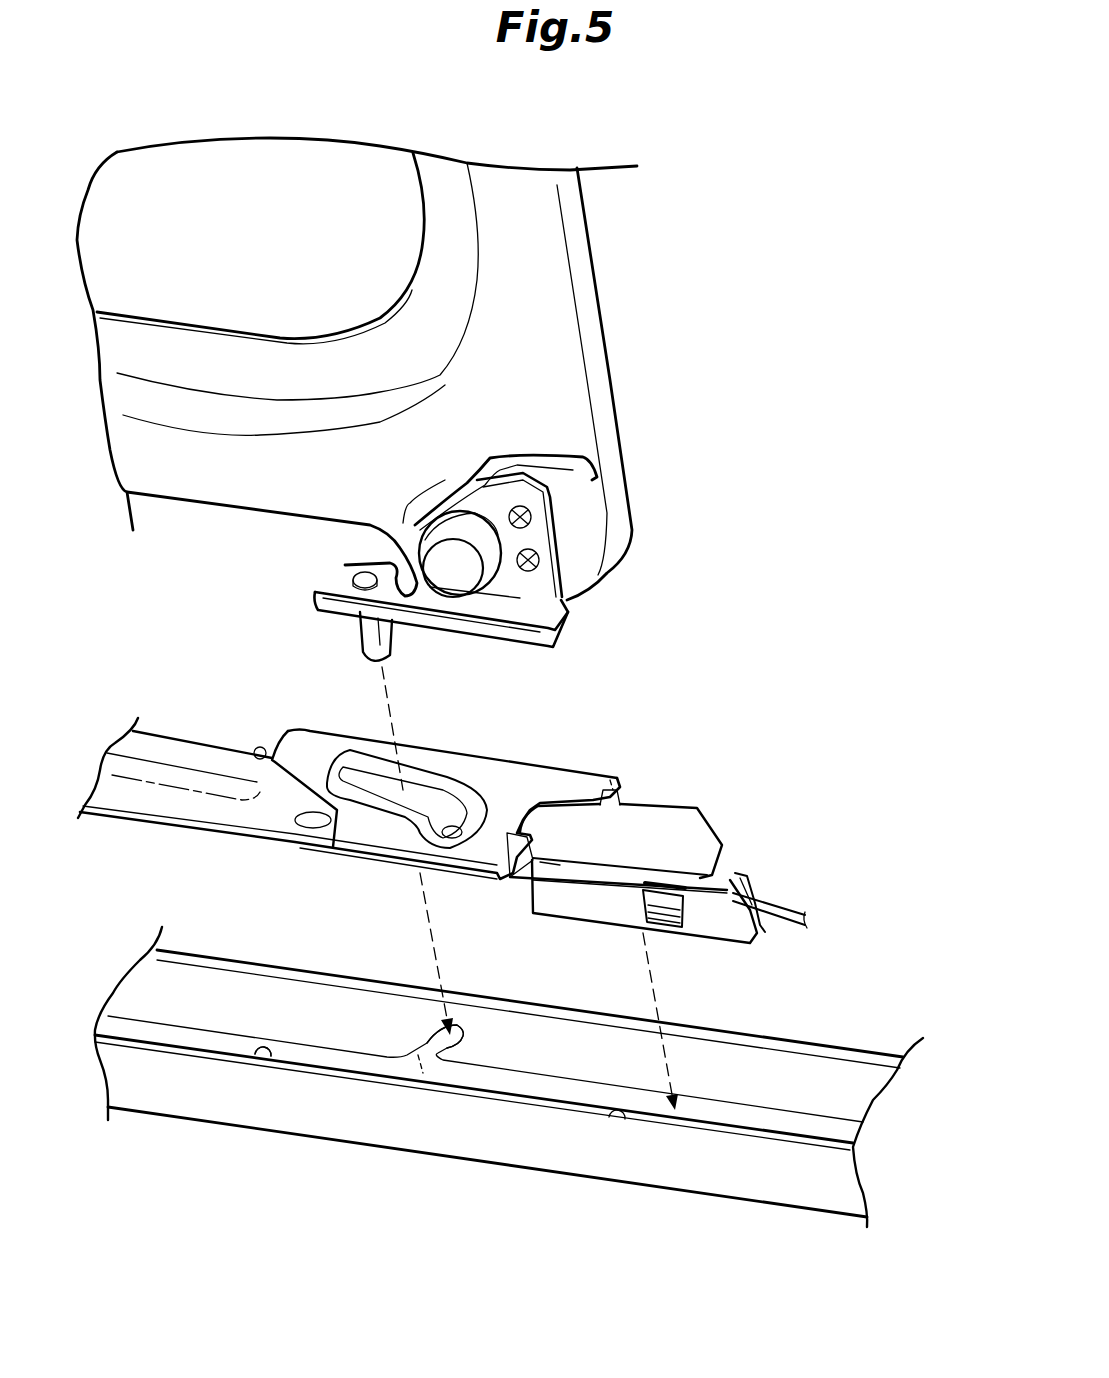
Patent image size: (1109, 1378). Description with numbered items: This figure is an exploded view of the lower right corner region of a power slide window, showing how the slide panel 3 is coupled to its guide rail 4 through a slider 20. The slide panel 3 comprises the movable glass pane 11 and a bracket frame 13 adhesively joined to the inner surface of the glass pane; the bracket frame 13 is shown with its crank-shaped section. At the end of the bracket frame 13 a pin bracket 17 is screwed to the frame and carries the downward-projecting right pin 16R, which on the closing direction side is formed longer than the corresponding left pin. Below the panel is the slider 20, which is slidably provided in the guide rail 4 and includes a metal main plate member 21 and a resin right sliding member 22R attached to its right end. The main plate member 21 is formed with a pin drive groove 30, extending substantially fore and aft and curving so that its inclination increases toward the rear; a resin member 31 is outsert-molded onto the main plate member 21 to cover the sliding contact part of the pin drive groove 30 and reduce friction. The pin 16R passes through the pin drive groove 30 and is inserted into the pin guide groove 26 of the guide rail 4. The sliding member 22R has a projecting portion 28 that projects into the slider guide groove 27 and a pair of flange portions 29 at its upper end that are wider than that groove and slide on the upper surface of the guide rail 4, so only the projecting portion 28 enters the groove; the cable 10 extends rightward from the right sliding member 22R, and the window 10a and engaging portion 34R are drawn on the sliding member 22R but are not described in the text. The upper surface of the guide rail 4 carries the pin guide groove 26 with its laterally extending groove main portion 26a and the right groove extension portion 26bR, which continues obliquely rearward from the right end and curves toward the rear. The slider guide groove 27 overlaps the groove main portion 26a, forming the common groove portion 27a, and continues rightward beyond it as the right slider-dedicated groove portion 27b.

The slide panel 3 is at (606, 270).
The movable glass pane 11 is at (313, 168).
The bracket frame 13 is at (520, 197).
The pin bracket 17 is at (553, 615).
The right pin 16R is at (367, 628).
The slider 20 is at (222, 836).
The main plate member 21 is at (142, 802).
The resin member 31 is at (518, 775).
The pin drive groove 30 is at (457, 840).
The flange portion 29 is at (723, 867).
The right sliding member 22R is at (733, 927).
The right engaging portion 34R is at (558, 863).
The cable window 10a is at (663, 917).
The cable 10 is at (777, 910).
The projecting portion 28 is at (762, 927).
The guide rail 4 is at (842, 1077).
The pin guide groove 26 is at (162, 1052).
The slider guide groove 27 is at (780, 1140).
The groove main portion 26a is at (267, 1058).
The common groove portion 27a is at (263, 1051).
The right groove extension portion 26bR is at (428, 1068).
The right slider-dedicated groove portion 27b is at (620, 1122).